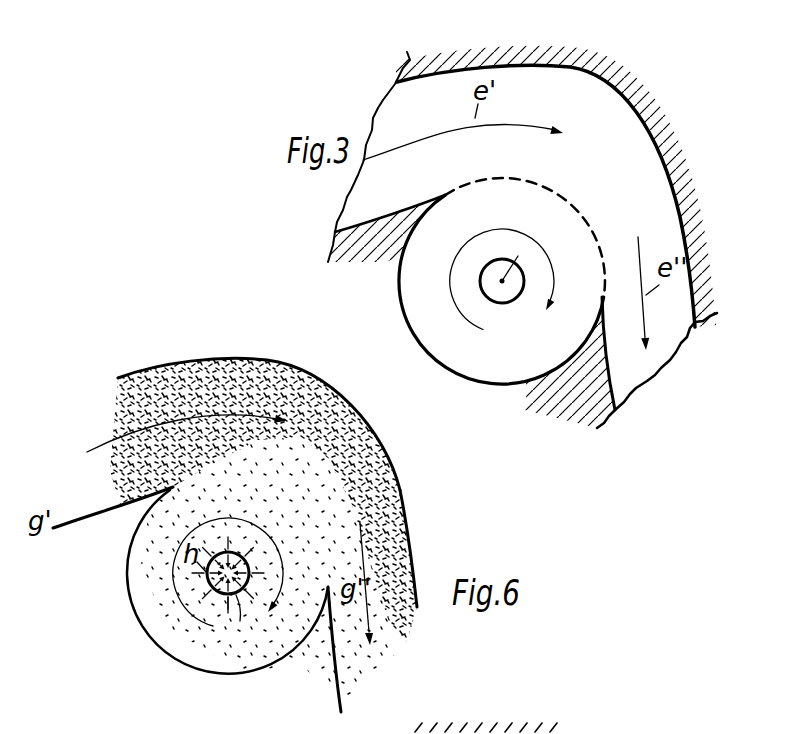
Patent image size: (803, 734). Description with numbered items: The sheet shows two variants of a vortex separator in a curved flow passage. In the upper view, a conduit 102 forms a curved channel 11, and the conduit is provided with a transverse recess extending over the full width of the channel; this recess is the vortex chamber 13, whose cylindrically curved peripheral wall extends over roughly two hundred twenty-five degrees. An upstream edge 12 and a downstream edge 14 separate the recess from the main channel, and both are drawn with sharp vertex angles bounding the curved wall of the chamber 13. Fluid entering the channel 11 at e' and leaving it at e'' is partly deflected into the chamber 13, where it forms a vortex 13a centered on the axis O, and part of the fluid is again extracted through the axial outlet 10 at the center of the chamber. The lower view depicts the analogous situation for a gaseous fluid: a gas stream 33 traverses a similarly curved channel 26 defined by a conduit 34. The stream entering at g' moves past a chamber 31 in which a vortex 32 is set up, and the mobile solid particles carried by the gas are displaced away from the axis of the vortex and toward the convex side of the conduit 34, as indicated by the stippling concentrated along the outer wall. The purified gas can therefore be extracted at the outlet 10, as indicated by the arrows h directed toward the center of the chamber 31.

In FIG. 3, the conduit 102 is at (593, 76).
In FIG. 3, the curved channel 11 is at (387, 133).
In FIG. 3, the upstream edge 12 is at (447, 195).
In FIG. 3, the vortex chamber 13 is at (430, 307).
In FIG. 3, the vortex 13a is at (467, 243).
In FIG. 3, the axial outlet 10 is at (503, 304).
In FIG. 3, the downstream edge 14 is at (603, 296).
In FIG. 6, the curved channel 26 is at (113, 430).
In FIG. 6, the chamber 31 is at (188, 641).
In FIG. 6, the vortex 32 is at (265, 537).
In FIG. 6, the gas stream 33 is at (257, 372).
In FIG. 6, the conduit 34 is at (413, 557).